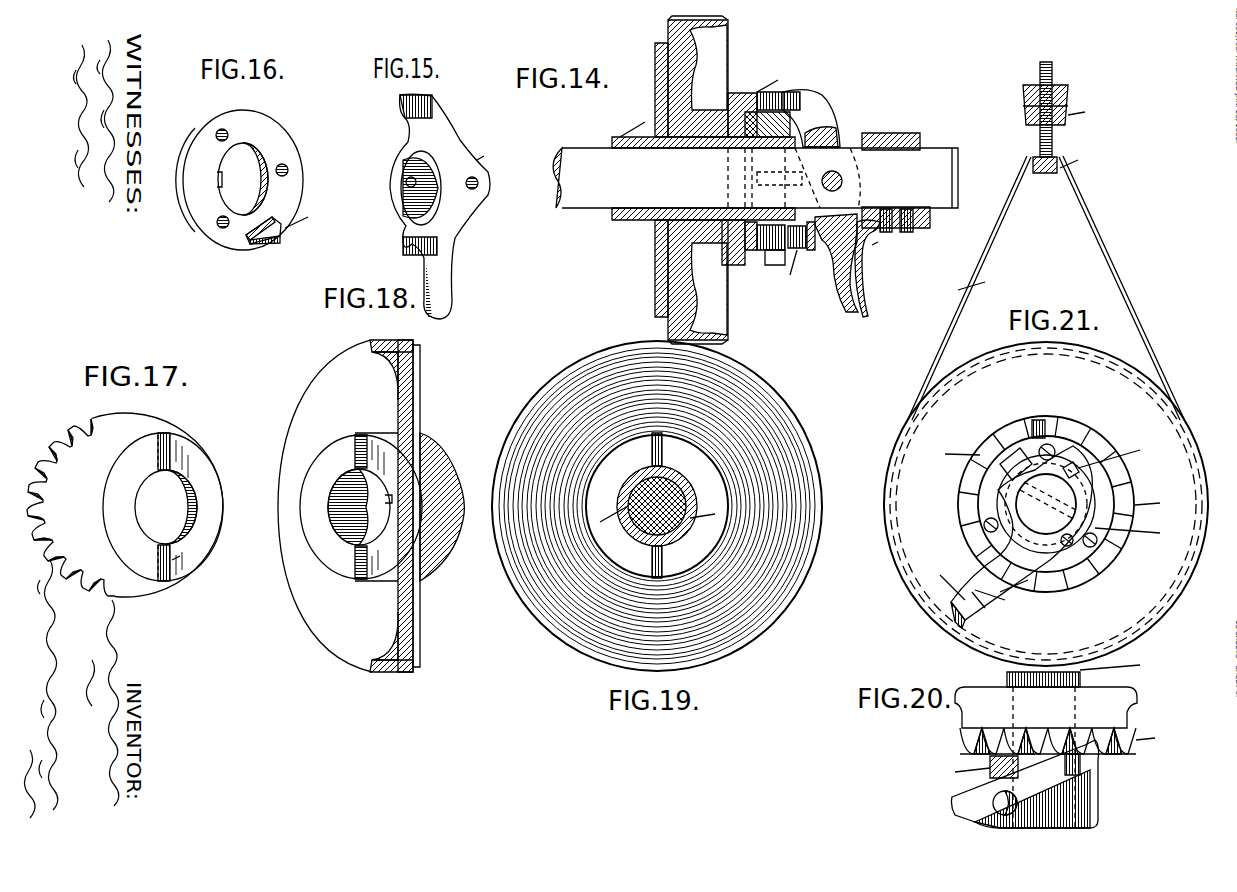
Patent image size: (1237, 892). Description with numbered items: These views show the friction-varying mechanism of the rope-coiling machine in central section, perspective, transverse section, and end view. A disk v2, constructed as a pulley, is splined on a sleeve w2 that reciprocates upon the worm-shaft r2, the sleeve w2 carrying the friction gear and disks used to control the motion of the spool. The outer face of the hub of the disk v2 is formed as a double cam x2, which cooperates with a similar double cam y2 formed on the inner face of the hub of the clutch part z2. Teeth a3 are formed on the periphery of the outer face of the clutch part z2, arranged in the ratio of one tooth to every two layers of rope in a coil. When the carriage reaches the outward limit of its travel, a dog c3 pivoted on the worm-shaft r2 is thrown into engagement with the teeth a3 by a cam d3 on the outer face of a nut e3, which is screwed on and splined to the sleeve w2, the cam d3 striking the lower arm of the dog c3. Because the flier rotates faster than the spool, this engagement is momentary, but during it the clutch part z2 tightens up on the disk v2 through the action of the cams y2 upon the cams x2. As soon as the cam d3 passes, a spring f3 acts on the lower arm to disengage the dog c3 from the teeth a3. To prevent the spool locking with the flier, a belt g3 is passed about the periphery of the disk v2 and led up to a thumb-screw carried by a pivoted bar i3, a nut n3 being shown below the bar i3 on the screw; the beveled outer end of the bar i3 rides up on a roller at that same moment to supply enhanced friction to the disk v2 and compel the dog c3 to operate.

In FIG. 14, the worm-shaft r2 is at (755, 182).
In FIG. 19, the worm-shaft r2 is at (638, 506).
In FIG. 14, the sleeve w2 is at (700, 163).
In FIG. 19, the sleeve w2 is at (657, 506).
In FIG. 20, the sleeve w2 is at (1085, 670).
In FIG. 14, the disk v2 is at (691, 180).
In FIG. 18, the disk v2 is at (371, 506).
In FIG. 21, the disk v2 is at (1046, 504).
In FIG. 14, the clutch part z2 is at (762, 163).
In FIG. 17, the clutch part z2 is at (161, 505).
In FIG. 21, the clutch part z2 is at (1081, 498).
In FIG. 20, the clutch part z2 is at (1046, 758).
In FIG. 18, the double cam x2 is at (361, 507).
In FIG. 17, the cam y2 is at (158, 507).
In FIG. 17, the teeth a3 is at (125, 505).
In FIG. 21, the teeth a3 is at (1056, 504).
In FIG. 20, the teeth a3 is at (1068, 740).
In FIG. 14, the dog c3 is at (821, 194).
In FIG. 15, the dog c3 is at (446, 206).
In FIG. 21, the dog c3 is at (1010, 537).
In FIG. 20, the dog c3 is at (1024, 784).
In FIG. 14, the cam d3 is at (795, 262).
In FIG. 16, the cam d3 is at (288, 222).
In FIG. 20, the cam d3 is at (1000, 766).
In FIG. 16, the nut e3 is at (239, 180).
In FIG. 21, the nut e3 is at (1111, 457).
In FIG. 14, the spring f3 is at (873, 268).
In FIG. 21, the spring f3 is at (1024, 578).
In FIG. 21, the belt g3 is at (1046, 288).
In FIG. 21, the bar i3 is at (1062, 105).
In FIG. 21, the nut n3 is at (1066, 117).